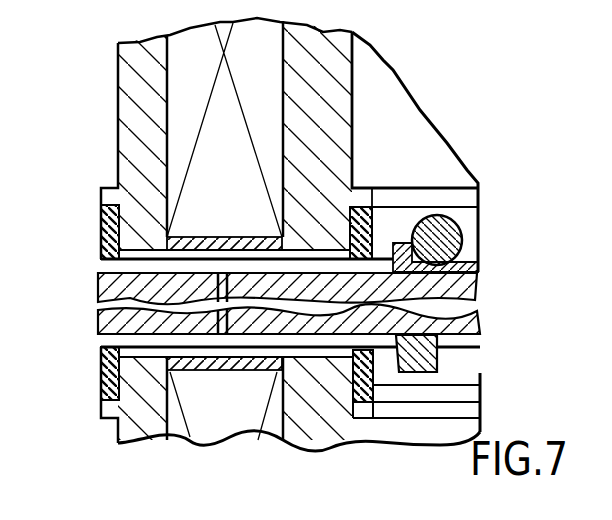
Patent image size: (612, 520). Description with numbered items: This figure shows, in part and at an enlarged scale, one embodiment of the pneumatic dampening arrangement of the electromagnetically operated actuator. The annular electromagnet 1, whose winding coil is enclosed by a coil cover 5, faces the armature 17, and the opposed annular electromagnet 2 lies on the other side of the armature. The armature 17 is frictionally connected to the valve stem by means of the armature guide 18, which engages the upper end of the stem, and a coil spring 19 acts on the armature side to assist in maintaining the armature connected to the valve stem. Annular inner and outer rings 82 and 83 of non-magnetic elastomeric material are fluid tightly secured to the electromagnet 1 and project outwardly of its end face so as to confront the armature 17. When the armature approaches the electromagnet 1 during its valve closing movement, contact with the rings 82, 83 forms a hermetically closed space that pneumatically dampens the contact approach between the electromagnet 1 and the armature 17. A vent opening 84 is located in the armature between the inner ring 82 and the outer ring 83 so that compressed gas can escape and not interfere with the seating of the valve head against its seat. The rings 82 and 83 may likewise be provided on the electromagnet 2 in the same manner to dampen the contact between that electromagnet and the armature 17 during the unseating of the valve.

The electromagnet 1 is at (135, 127).
The electromagnet 2 is at (143, 430).
The coil cover 5 is at (232, 237).
The armature 17 is at (102, 292).
The armature guide 18 is at (433, 353).
The coil spring 19 is at (455, 243).
The inner ring 82 is at (112, 229).
The outer ring 83 is at (375, 222).
The vent opening 84 is at (112, 318).